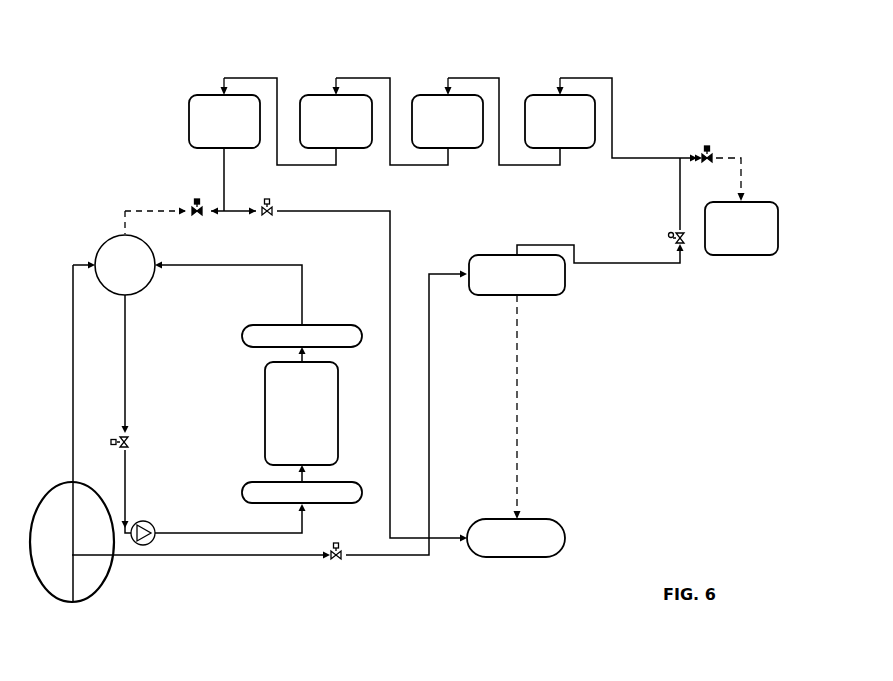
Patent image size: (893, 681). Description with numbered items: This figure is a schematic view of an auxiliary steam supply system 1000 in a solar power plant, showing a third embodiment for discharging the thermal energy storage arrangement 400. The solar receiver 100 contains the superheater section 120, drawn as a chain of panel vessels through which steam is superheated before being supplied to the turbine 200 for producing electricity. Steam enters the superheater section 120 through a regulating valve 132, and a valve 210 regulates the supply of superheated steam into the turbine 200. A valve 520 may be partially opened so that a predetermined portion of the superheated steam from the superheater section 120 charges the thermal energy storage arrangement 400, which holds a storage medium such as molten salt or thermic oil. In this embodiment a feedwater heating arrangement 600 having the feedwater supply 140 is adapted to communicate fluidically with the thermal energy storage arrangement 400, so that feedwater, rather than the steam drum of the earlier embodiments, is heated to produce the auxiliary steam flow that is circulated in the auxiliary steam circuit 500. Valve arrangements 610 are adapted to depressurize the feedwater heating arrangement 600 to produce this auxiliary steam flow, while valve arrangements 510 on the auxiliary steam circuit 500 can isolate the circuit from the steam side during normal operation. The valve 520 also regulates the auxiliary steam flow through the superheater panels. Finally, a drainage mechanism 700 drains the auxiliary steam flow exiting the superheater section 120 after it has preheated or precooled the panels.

The system 1000 is at (634, 67).
The solar receiver 100 is at (120, 148).
The superheater section 120 is at (436, 45).
The regulating valve 132 is at (191, 204).
The feedwater supply 140 is at (120, 588).
The turbine 200 is at (778, 263).
The valve 210 is at (698, 143).
The thermal energy storage arrangement 400 is at (568, 301).
The auxiliary steam circuit 500 is at (454, 310).
The valve arrangements 510 is at (283, 199).
The valve 520 is at (670, 226).
The feedwater heating arrangement 600 is at (405, 573).
The valve arrangements 610 is at (341, 566).
The drainage mechanism 700 is at (567, 519).